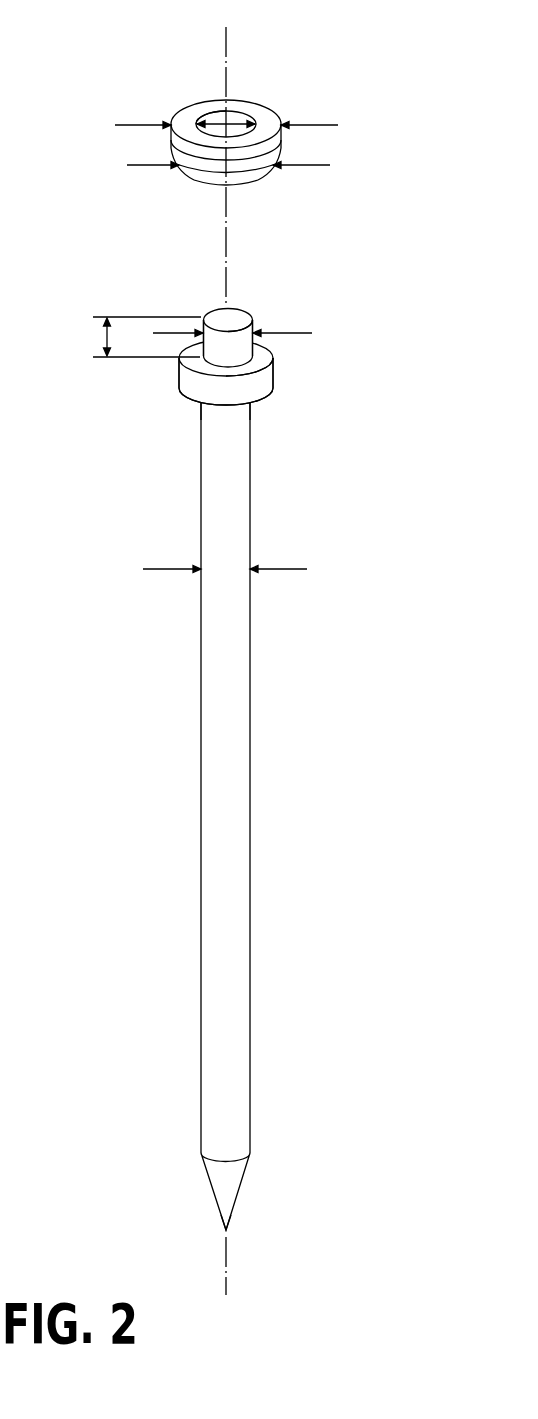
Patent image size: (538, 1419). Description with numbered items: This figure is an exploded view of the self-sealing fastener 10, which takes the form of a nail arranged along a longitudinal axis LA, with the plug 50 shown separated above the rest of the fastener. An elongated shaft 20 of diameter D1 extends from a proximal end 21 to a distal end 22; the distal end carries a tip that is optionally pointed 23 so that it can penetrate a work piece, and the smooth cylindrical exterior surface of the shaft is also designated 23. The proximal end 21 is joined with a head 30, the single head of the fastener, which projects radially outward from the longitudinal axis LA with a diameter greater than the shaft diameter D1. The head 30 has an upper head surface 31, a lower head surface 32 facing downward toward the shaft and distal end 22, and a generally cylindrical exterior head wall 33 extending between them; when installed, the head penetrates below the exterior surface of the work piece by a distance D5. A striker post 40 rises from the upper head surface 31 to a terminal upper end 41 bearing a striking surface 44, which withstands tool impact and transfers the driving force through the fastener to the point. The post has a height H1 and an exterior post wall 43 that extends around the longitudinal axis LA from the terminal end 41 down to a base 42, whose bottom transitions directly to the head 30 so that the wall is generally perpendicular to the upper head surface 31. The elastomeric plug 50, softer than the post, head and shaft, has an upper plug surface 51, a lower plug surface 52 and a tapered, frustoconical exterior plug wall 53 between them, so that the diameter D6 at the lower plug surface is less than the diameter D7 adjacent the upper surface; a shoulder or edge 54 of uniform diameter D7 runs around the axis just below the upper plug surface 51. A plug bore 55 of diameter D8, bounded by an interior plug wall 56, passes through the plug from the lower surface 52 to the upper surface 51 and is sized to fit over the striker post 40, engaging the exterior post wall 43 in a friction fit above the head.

The self-sealing fastener 10 is at (240, 769).
The elongated shaft 20 is at (214, 841).
The proximal end 21 is at (200, 403).
The distal end 22 is at (212, 1188).
The pointed tip 23 is at (227, 1232).
The head 30 is at (218, 379).
The upper head surface 31 is at (263, 355).
The lower head surface 32 is at (260, 400).
The exterior head wall 33 is at (273, 377).
The striker post 40 is at (209, 308).
The terminal upper end 41 is at (240, 310).
The base 42 is at (267, 363).
The exterior post wall 43 is at (243, 347).
The striking surface 44 is at (225, 322).
The plug 50 is at (250, 133).
The upper plug surface 51 is at (278, 115).
The lower plug surface 52 is at (263, 168).
The exterior plug wall 53 is at (207, 153).
The shoulder or edge 54 is at (175, 152).
The plug bore 55 is at (217, 121).
The interior plug wall 56 is at (203, 117).
The longitudinal axis LA is at (227, 80).
The shaft diameter D1 is at (243, 570).
The head penetration distance D5 is at (215, 335).
The lower plug surface diameter D6 is at (246, 167).
The upper plug diameter D7 is at (246, 125).
The plug bore diameter D8 is at (231, 118).
The striker post height H1 is at (105, 340).